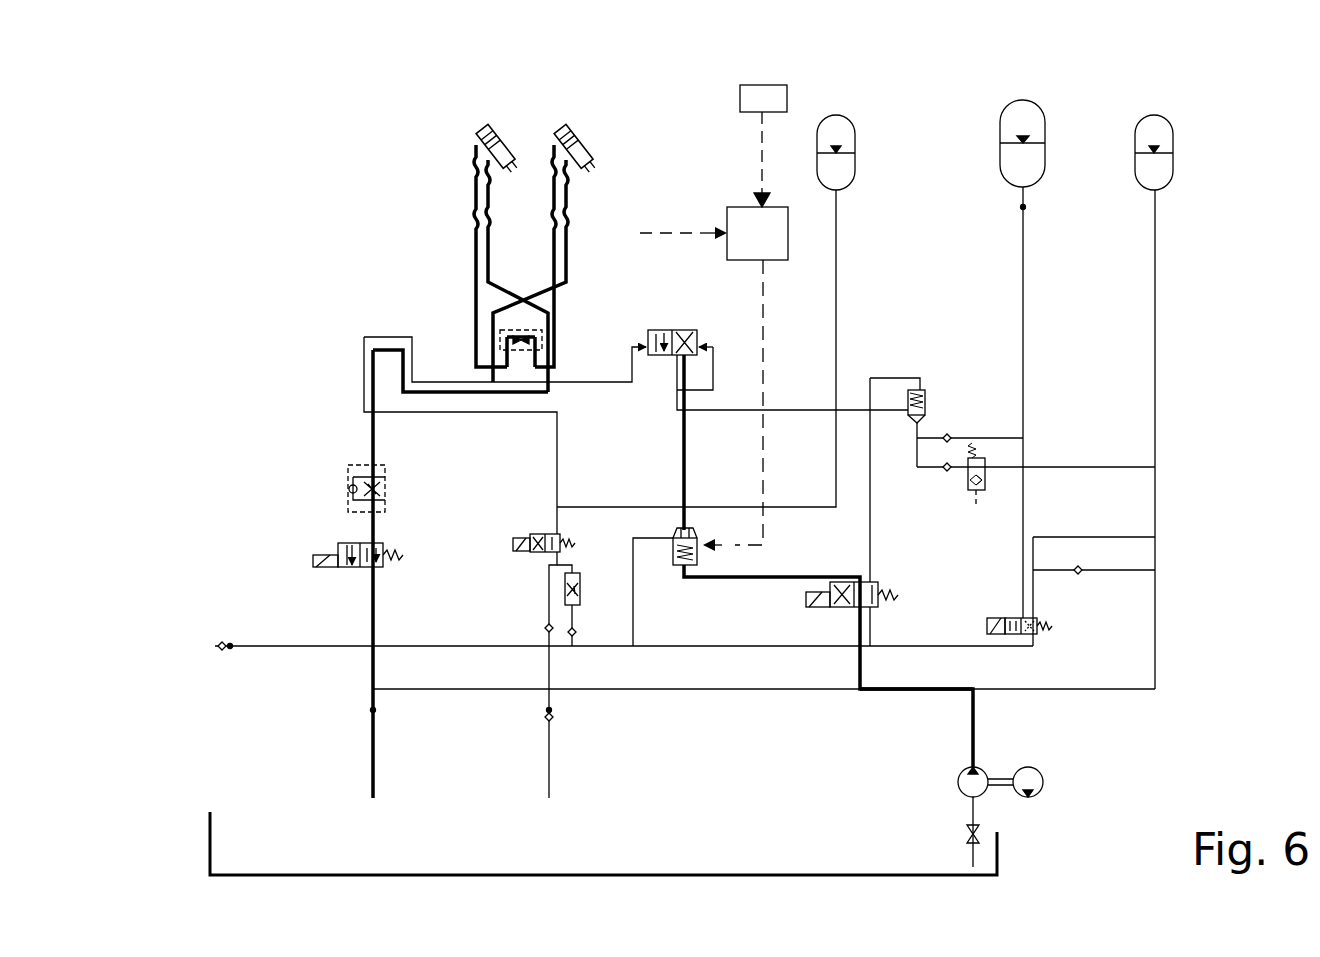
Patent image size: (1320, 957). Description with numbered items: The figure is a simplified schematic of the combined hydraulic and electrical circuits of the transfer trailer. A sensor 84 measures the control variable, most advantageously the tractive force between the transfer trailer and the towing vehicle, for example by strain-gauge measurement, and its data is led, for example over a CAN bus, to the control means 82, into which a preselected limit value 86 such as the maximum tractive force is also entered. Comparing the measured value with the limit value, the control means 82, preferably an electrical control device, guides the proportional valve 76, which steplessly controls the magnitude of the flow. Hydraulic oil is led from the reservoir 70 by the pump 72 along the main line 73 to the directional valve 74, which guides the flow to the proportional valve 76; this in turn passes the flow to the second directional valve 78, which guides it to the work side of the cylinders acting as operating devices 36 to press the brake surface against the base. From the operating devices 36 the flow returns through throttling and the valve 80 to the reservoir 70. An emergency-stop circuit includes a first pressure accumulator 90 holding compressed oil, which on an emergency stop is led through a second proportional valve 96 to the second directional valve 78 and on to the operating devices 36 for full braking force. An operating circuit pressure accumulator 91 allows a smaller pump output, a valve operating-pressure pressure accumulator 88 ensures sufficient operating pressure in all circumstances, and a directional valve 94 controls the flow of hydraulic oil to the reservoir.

The operating device 36 is at (495, 116).
The reservoir 70 is at (765, 872).
The pump 72 is at (1060, 782).
The main line 73 is at (912, 690).
The directional valve 74 is at (906, 600).
The proportional valve 76 is at (660, 570).
The second directional valve 78 is at (667, 325).
The valve 80 is at (330, 518).
The control means 82 is at (746, 376).
The sensor 84 is at (776, 100).
The preselected limit value 86 is at (686, 192).
The valve operating-pressure pressure accumulator 88 is at (838, 132).
The first pressure accumulator 90 is at (1023, 120).
The operating circuit pressure accumulator 91 is at (1155, 130).
The directional valve 94 is at (1062, 626).
The second proportional valve 96 is at (937, 393).